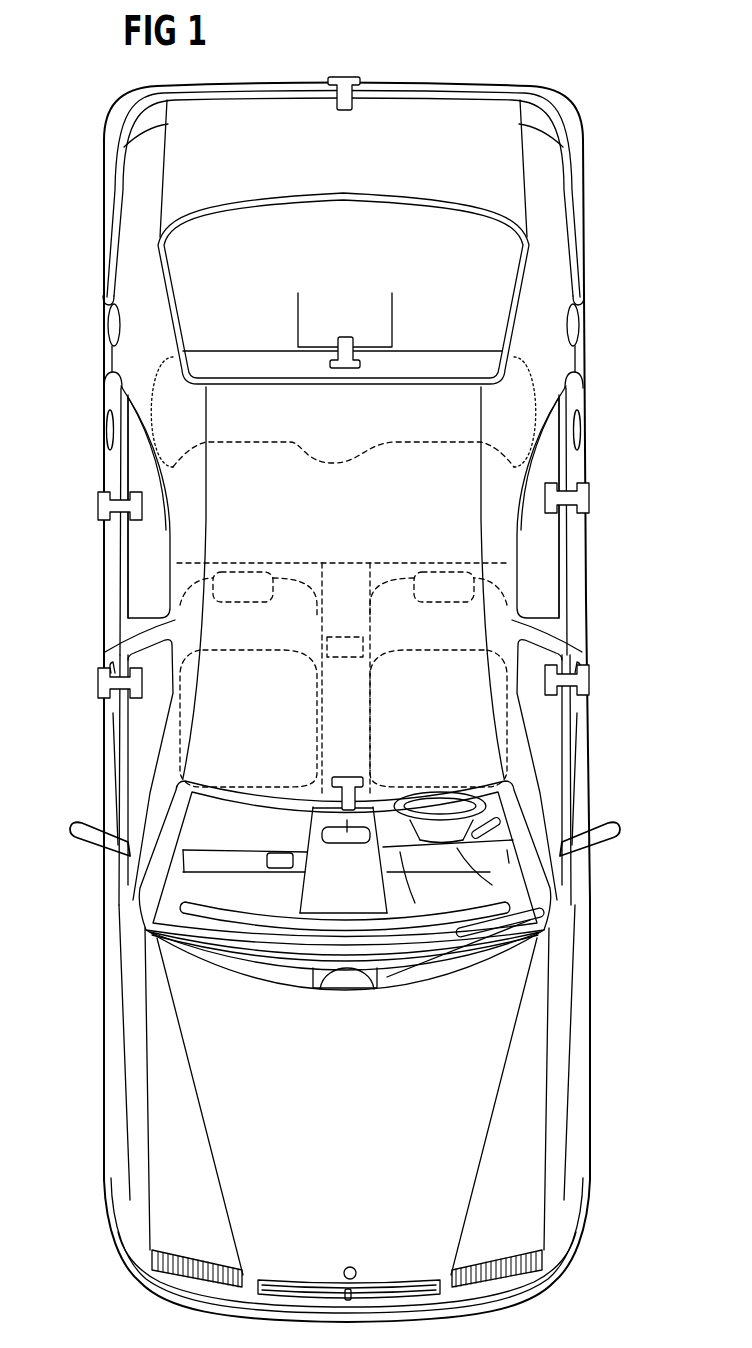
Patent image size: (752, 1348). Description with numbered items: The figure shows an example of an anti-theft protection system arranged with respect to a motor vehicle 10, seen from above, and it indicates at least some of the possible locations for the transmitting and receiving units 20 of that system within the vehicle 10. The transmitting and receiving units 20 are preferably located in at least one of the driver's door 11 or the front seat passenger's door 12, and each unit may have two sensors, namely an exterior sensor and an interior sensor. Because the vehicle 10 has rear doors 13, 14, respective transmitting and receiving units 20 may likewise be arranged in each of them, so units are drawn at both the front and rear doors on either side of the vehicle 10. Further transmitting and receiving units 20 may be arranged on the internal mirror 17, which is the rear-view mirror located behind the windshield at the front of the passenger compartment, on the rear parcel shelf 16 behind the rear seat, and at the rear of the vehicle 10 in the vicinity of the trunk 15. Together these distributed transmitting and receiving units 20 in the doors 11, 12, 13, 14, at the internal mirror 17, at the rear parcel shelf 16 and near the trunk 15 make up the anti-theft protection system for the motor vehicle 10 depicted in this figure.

The motor vehicle 10 is at (585, 95).
The driver's door 11 is at (583, 766).
The front seat passenger's door 12 is at (105, 770).
The rear door 13 is at (578, 570).
The rear door 14 is at (110, 577).
The trunk 15 is at (470, 117).
The rear parcel shelf 16 is at (268, 413).
The internal mirror 17 is at (333, 838).
The transmitting and receiving unit 20 is at (347, 77).